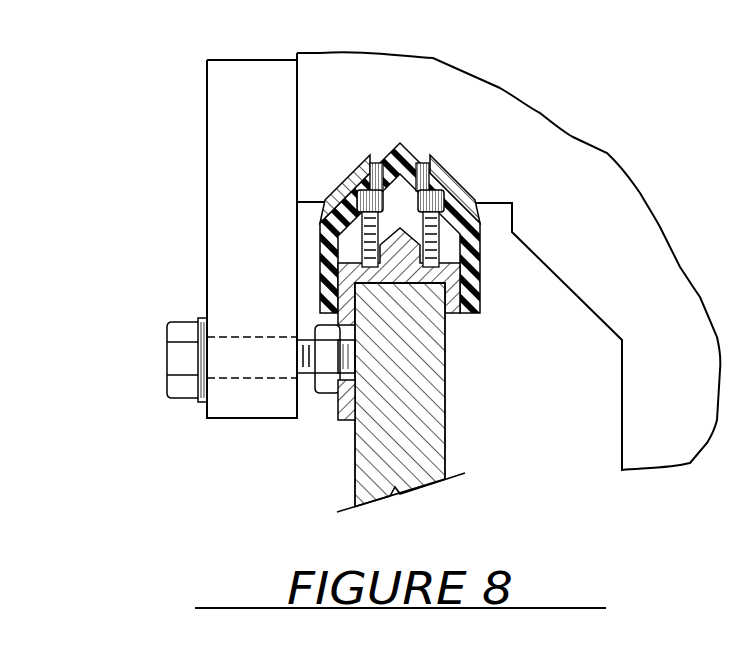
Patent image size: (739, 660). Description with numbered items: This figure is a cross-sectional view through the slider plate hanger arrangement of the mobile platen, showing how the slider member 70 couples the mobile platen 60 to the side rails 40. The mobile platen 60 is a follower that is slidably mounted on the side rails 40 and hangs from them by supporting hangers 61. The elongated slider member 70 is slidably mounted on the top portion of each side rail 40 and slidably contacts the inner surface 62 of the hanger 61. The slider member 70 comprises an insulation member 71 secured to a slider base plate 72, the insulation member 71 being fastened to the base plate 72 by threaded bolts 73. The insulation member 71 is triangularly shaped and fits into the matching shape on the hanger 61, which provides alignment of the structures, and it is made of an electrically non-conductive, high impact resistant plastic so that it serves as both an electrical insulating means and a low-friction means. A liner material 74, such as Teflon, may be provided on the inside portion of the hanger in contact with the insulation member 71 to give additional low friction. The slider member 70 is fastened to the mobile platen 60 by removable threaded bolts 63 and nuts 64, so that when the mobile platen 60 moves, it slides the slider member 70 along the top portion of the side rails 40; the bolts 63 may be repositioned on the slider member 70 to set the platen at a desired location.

The side rail 40 is at (445, 408).
The mobile platen 60 is at (567, 153).
The supporting hanger 61 is at (207, 113).
The inner surface 62 is at (398, 143).
The threaded bolt 63 is at (167, 362).
The nut 64 is at (315, 392).
The slider member 70 is at (295, 436).
The insulation member 71 is at (418, 155).
The slider base plate 72 is at (345, 420).
The threaded bolt 73 is at (365, 264).
The liner material 74 is at (347, 177).